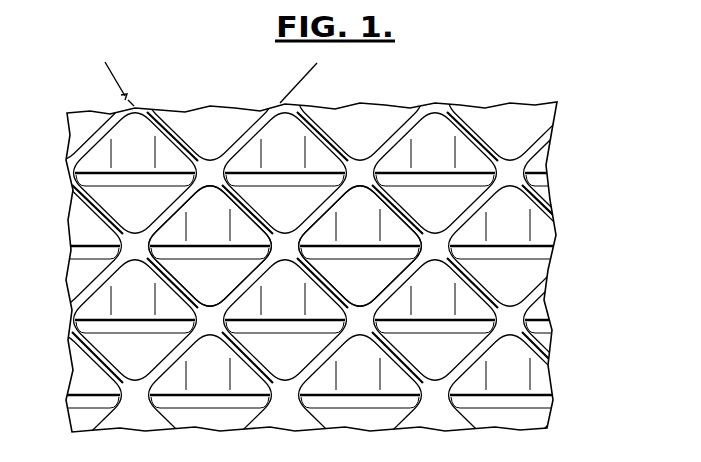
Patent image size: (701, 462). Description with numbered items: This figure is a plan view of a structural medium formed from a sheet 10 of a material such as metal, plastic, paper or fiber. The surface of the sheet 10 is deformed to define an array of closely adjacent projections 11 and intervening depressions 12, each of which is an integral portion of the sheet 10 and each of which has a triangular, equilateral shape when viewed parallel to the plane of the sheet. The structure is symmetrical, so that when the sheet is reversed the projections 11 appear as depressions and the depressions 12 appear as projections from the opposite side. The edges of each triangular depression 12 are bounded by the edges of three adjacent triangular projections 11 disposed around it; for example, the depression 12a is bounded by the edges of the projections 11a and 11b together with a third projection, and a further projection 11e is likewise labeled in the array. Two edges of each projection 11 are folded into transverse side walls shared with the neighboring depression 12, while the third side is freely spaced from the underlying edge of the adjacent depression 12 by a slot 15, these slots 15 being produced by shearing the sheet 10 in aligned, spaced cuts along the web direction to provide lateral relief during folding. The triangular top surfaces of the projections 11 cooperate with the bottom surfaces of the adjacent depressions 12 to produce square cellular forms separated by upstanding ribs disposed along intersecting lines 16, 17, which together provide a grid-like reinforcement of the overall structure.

The sheet 10 is at (323, 247).
The projections 11 is at (437, 120).
The projection 11a is at (300, 104).
The projection 11b is at (233, 223).
The upper triangular opening 11e is at (380, 228).
The depressions 12 is at (220, 122).
The depression 12a is at (283, 230).
The slot 15 is at (307, 170).
The intersecting line 16 is at (126, 74).
The intersecting line 17 is at (293, 80).